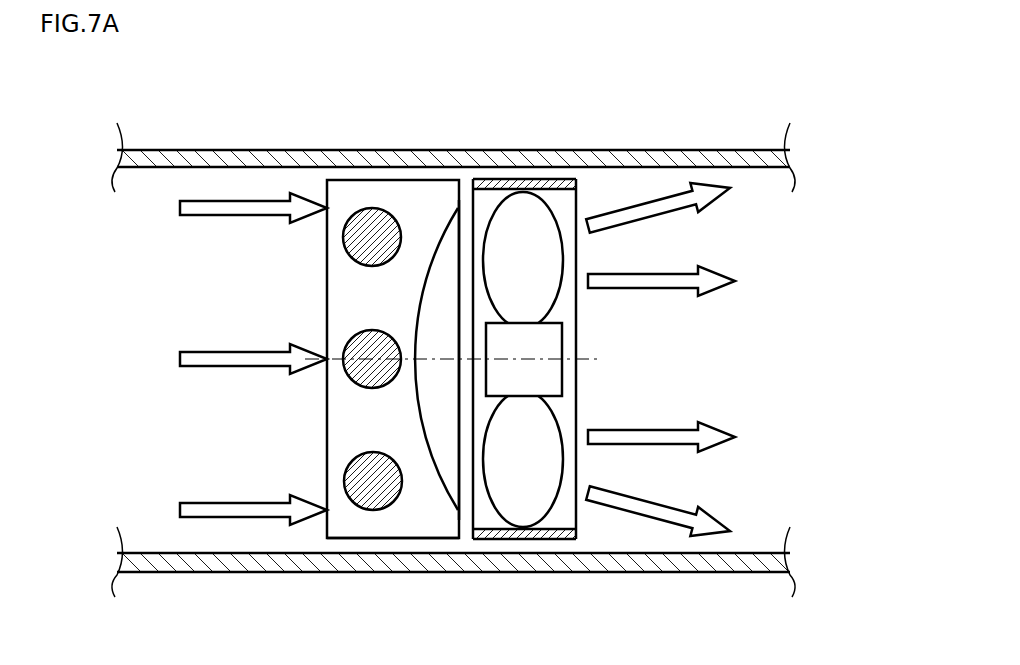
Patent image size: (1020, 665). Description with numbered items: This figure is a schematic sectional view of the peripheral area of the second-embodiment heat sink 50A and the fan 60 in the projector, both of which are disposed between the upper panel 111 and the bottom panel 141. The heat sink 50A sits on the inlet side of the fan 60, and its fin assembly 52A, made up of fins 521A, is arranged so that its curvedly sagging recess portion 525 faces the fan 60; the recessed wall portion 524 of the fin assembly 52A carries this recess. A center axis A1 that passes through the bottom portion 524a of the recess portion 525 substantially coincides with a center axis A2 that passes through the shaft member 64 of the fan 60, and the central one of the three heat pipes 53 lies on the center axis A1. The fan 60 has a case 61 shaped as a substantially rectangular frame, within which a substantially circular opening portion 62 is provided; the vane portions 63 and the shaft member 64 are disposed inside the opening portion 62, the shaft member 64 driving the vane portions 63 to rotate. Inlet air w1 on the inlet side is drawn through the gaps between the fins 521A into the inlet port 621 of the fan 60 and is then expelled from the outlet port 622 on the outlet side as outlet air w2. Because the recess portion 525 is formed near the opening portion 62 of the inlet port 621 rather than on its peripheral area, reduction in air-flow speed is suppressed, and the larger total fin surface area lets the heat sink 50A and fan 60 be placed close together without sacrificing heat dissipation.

The upper panel 111 is at (210, 150).
The bottom panel 141 is at (348, 572).
The heat sink 50A is at (408, 363).
The fin assembly 52A is at (406, 179).
The fins 521A is at (407, 528).
The lens 524 is at (314, 363).
The bottom portion 524a is at (462, 500).
The recess portion 525 is at (440, 257).
The heat pipes 53 is at (358, 212).
The fan 60 is at (460, 363).
The case 61 is at (560, 184).
The opening portion 62 is at (577, 187).
The inlet port 621 is at (472, 305).
The outlet port 622 is at (578, 255).
The vane portions 63 is at (523, 218).
The shaft member 64 is at (545, 374).
The inlet air w1 is at (180, 208).
The outlet air w2 is at (717, 202).
The center axis A1 is at (340, 362).
The center axis A2 is at (582, 358).